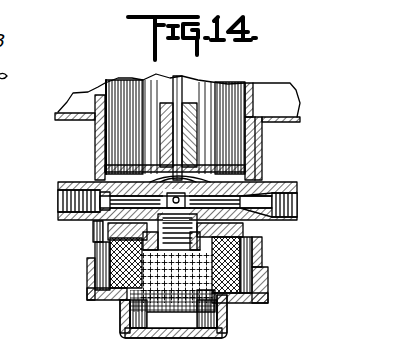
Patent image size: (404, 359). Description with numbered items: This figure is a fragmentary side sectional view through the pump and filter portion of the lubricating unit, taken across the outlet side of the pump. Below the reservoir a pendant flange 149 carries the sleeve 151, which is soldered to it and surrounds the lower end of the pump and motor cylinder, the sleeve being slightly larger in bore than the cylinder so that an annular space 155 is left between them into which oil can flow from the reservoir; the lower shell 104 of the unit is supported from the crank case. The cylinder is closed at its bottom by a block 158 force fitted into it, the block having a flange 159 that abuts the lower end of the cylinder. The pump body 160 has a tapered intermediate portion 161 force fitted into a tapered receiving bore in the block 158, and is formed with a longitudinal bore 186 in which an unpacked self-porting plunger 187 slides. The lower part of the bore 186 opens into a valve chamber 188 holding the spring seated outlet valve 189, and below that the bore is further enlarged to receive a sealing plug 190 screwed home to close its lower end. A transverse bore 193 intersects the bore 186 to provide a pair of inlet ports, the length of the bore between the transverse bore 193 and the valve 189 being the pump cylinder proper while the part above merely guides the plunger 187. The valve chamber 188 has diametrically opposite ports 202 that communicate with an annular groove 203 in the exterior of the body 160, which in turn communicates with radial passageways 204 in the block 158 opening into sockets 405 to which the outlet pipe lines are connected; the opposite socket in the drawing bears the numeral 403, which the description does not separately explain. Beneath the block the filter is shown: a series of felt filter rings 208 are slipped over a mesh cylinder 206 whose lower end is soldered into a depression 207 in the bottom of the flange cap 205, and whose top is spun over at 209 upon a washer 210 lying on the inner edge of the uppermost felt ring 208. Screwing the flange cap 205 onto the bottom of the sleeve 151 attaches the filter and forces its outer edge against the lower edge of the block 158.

The lower shell 104 is at (68, 102).
The pendant flange 149 is at (95, 131).
The sleeve 151 is at (265, 142).
The annular space 155 is at (252, 235).
The block 158 is at (103, 230).
The flange 159 is at (103, 240).
The pump body 160 is at (236, 84).
The tapered intermediate portion 161 is at (223, 173).
The longitudinal bore 186 is at (146, 84).
The plunger 187 is at (180, 96).
The valve chamber 188 is at (150, 175).
The outlet valve 189 is at (203, 170).
The sealing plug 190 is at (113, 272).
The transverse bore 193 is at (162, 172).
The ports 202 is at (260, 183).
The annular groove 203 is at (252, 303).
The radial passageways 204 is at (264, 229).
The flange cap 205 is at (93, 300).
The mesh cylinder 206 is at (120, 307).
The depression 207 is at (137, 337).
The felt filter rings 208 is at (232, 308).
The spun-over top 209 is at (258, 268).
The washer 210 is at (262, 285).
The threaded port 403 is at (292, 208).
The sockets 405 is at (58, 213).